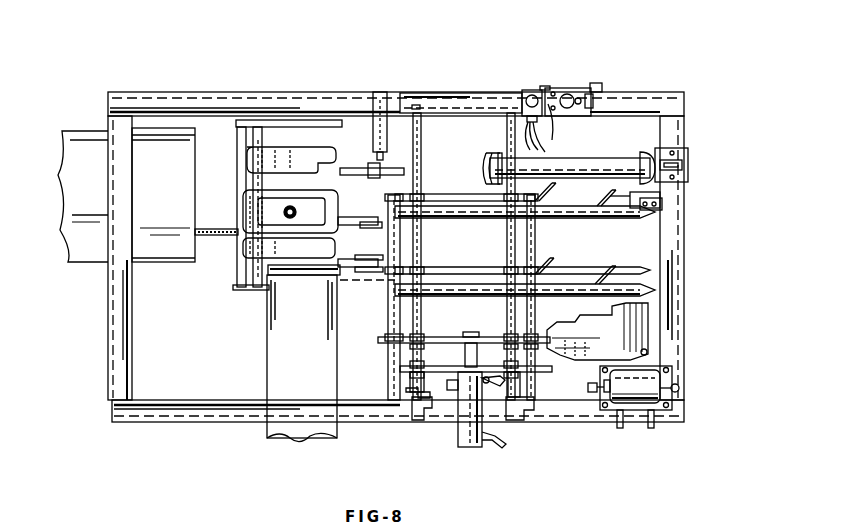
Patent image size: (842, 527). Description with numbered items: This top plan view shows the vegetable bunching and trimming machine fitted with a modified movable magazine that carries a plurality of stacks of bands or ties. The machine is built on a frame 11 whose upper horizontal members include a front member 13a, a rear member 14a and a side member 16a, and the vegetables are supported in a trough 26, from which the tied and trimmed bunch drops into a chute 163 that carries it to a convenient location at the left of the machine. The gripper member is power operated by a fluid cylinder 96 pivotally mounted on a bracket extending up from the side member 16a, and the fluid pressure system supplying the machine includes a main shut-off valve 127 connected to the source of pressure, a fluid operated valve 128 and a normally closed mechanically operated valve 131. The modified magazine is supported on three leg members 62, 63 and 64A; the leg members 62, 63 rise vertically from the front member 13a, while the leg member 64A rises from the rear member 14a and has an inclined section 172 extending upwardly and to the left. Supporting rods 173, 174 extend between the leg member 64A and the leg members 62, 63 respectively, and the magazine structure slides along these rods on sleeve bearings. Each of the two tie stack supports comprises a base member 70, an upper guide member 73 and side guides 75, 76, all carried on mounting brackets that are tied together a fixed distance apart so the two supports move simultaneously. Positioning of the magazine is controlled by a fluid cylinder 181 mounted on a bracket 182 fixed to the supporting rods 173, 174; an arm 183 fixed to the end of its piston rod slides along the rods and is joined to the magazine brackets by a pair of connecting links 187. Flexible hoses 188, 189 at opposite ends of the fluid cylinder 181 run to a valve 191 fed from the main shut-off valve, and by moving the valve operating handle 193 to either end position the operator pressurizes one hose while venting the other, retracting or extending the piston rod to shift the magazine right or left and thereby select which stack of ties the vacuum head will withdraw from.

The frame 11 is at (172, 428).
The front member 13a is at (194, 400).
The rear member 14a is at (163, 100).
The side member 16a is at (684, 272).
The trough 26 is at (306, 150).
The leg member 62 is at (410, 420).
The leg member 63 is at (534, 420).
The leg member 64A is at (446, 84).
The base member 70 is at (628, 286).
The upper guide member 73 is at (482, 220).
The side guide 75 is at (450, 268).
The side guide 76 is at (593, 270).
The fluid cylinder 96 is at (634, 155).
The main shut-off valve 127 is at (576, 90).
The fluid operated valve 128 is at (638, 400).
The mechanically operated valve 131 is at (655, 194).
The chute 163 is at (94, 262).
The inclined section 172 is at (414, 92).
The supporting rod 173 is at (421, 140).
The supporting rod 174 is at (504, 140).
The fluid cylinder 181 is at (478, 447).
The bracket 182 is at (408, 380).
The arm 183 is at (446, 337).
The connecting link 187 is at (388, 318).
The flexible hose 188 is at (505, 382).
The flexible hose 189 is at (502, 446).
The valve 191 is at (551, 88).
The valve operating handle 193 is at (526, 90).